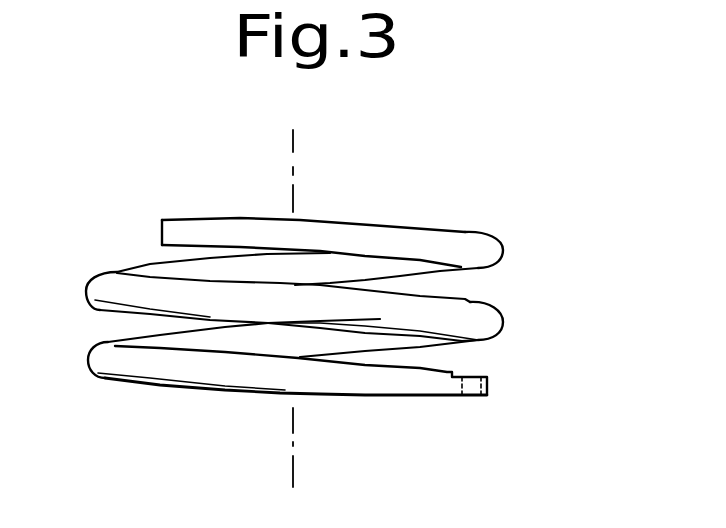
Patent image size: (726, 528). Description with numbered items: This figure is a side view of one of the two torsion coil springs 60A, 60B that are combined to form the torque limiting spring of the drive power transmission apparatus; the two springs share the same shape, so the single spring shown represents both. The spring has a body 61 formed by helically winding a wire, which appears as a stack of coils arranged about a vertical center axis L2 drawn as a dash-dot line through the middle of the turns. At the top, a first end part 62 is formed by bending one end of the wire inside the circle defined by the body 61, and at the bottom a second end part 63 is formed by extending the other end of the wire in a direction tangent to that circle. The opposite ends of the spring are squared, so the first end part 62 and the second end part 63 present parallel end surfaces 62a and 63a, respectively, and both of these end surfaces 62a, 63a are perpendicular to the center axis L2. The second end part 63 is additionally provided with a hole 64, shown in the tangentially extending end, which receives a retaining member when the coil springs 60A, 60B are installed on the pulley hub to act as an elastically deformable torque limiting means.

The torsion coil spring 60A is at (457, 231).
The torsion coil spring 60B is at (341, 310).
The body 61 is at (476, 303).
The first end part 62 is at (162, 233).
The end surface 62a is at (198, 220).
The second end part 63 is at (488, 385).
The end surface 63a is at (412, 396).
The hole 64 is at (474, 381).
The center axis L2 is at (295, 150).